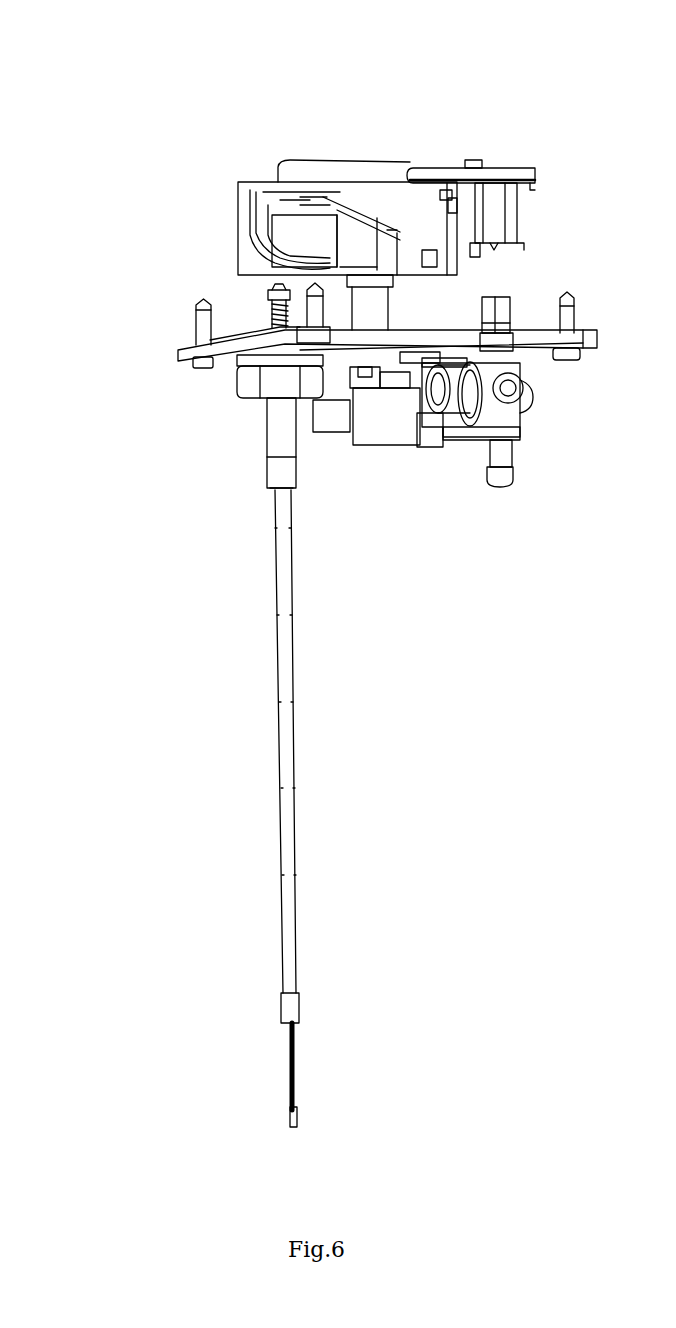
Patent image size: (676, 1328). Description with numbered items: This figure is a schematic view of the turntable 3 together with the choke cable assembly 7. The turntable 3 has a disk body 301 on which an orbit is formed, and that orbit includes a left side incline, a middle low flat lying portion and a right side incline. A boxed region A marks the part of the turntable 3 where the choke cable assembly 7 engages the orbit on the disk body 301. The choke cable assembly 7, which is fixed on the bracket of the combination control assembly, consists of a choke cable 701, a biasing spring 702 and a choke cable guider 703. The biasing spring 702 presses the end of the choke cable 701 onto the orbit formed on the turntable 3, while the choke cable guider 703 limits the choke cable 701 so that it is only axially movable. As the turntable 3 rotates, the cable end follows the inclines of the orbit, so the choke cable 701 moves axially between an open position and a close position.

The turntable 3 is at (427, 163).
The disk body 301 is at (447, 198).
The region A (enlarged detail region) A is at (238, 218).
The choke cable assembly 7 is at (108, 338).
The choke cable 701 is at (276, 285).
The biasing spring 702 is at (277, 322).
The choke cable guider 703 is at (277, 435).